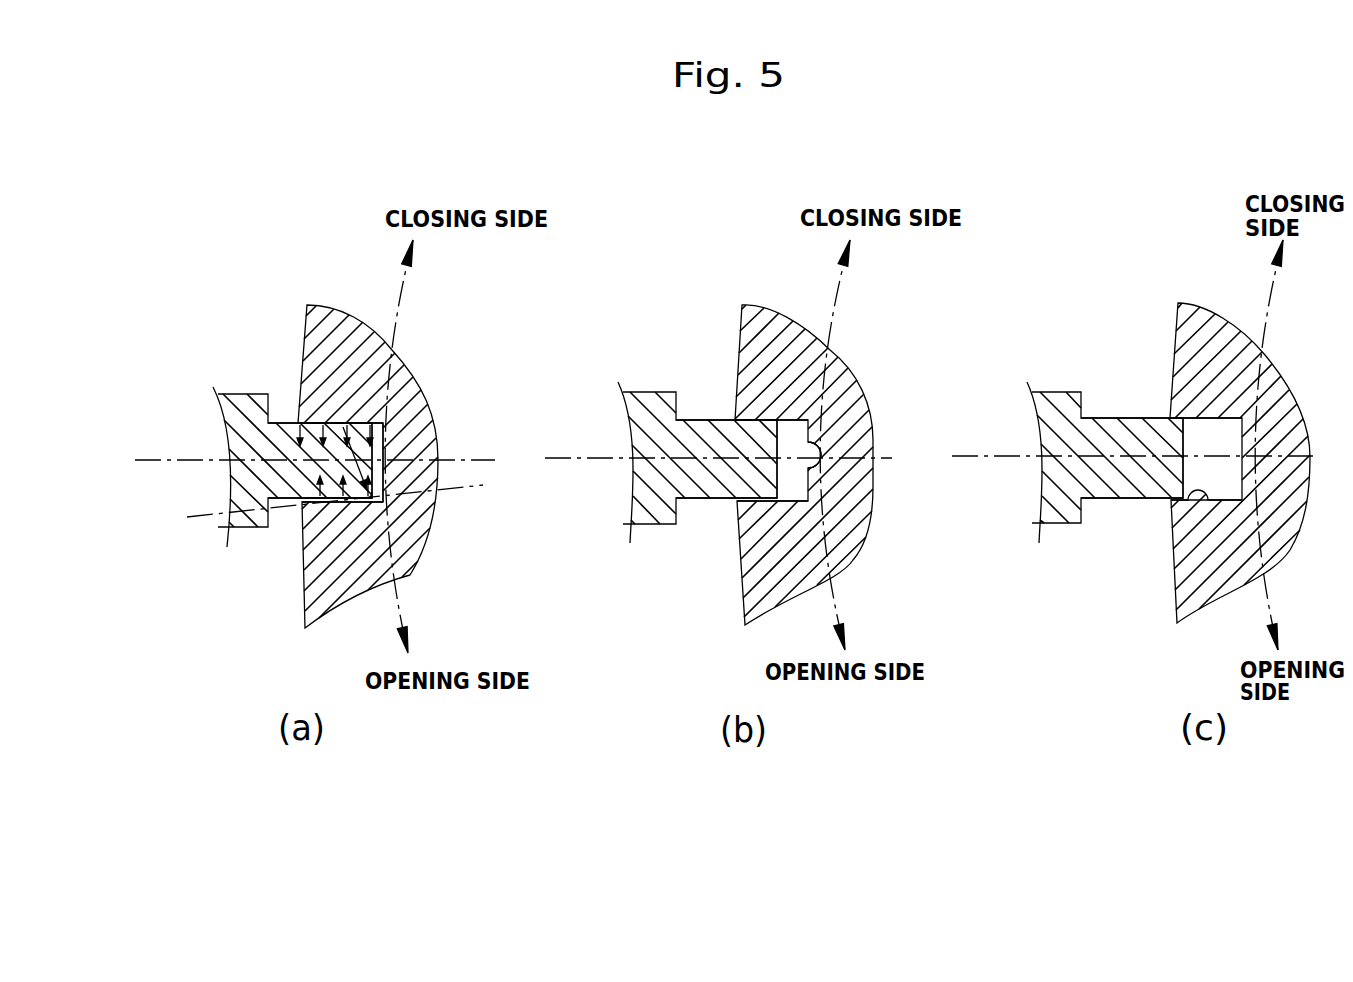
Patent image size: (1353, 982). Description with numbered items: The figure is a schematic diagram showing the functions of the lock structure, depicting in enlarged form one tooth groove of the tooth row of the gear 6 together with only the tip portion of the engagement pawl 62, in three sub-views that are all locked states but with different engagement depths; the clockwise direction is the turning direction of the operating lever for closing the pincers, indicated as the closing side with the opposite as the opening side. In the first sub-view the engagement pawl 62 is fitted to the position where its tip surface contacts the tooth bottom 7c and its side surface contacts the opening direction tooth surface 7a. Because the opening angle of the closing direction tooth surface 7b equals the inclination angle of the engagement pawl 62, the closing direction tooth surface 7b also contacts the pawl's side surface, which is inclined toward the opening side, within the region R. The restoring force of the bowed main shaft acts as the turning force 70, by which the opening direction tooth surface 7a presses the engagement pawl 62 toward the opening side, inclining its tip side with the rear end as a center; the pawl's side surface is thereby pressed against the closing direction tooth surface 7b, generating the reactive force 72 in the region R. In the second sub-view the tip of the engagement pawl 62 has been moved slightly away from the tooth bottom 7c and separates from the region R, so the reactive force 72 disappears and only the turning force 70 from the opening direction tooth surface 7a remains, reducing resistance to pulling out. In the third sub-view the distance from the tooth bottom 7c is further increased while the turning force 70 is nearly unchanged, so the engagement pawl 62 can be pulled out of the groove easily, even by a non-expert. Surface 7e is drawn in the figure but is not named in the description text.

The gear 6 is at (412, 390).
The engagement pawl 62 is at (245, 403).
The turning force 70 is at (300, 424).
The reactive force 72 is at (305, 490).
The opening direction tooth surface 7a is at (335, 427).
The closing direction tooth surface 7b is at (297, 503).
The tooth bottom 7c is at (812, 462).
The pressing surface 7e is at (360, 445).
The region R is at (354, 498).